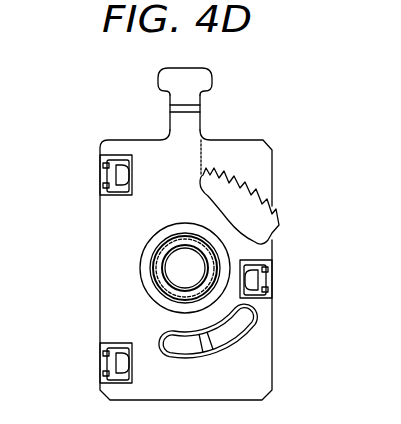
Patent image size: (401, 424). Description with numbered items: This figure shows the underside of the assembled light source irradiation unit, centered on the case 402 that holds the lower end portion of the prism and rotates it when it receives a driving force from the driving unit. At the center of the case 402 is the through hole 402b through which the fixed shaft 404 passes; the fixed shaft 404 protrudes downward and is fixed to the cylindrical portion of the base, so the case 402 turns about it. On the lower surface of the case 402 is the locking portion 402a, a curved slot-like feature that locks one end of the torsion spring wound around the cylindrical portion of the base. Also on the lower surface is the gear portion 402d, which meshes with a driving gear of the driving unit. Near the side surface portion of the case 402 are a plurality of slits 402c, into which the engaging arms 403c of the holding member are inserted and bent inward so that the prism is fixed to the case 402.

The case 402 is at (100, 267).
The locking portion 402a is at (235, 327).
The through hole 402b is at (153, 254).
The slits 402c is at (104, 191).
The gear portion 402d is at (268, 192).
The engaging arms 403c is at (113, 172).
The fixed shaft 404 is at (158, 280).